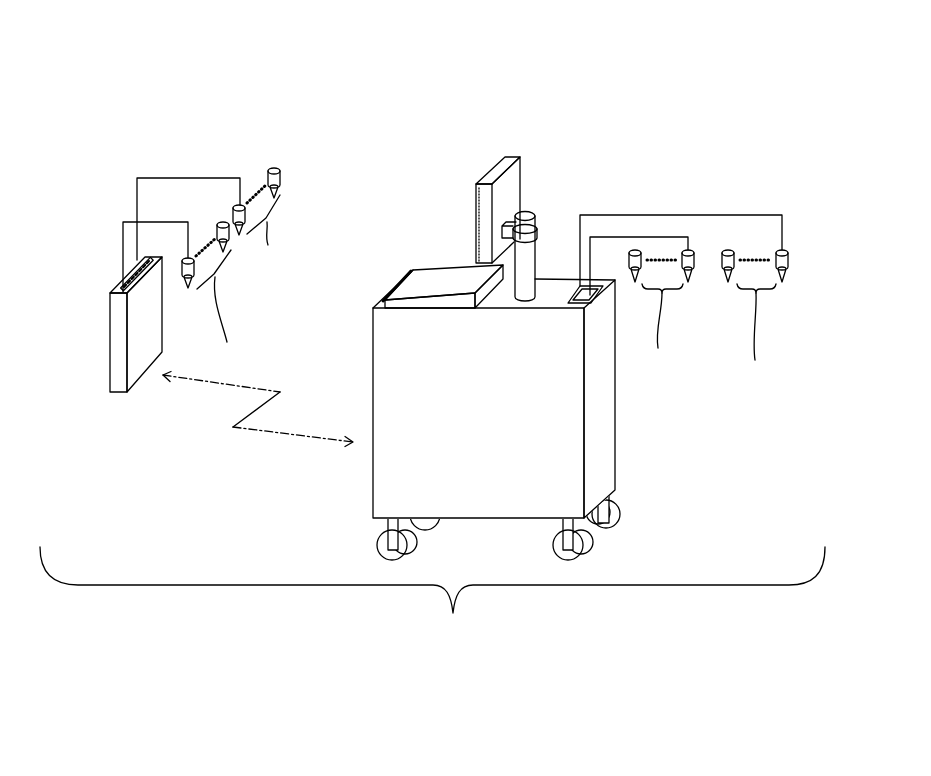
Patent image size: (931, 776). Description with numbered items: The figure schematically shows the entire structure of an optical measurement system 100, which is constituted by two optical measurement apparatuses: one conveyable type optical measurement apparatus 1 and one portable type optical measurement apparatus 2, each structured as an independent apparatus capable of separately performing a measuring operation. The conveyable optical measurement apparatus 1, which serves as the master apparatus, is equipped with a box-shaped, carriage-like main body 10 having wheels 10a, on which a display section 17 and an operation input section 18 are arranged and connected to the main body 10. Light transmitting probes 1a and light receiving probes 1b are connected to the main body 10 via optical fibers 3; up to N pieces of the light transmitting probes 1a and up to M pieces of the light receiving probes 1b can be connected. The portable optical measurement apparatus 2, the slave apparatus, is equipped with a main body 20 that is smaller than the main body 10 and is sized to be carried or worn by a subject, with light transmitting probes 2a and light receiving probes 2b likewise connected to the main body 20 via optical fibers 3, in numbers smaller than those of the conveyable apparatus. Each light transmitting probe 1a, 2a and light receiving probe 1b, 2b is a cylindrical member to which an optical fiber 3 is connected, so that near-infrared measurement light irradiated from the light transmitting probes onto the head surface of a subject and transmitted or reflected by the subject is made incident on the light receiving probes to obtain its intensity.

The optical measurement system 100 is at (191, 103).
The conveyable type optical measurement apparatus 1 is at (400, 192).
The light transmitting probe 1a is at (633, 284).
The light receiving probe 1b is at (727, 284).
The portable type optical measurement apparatus 2 is at (90, 174).
The light transmitting probe 2a is at (188, 291).
The light receiving probe 2b is at (276, 200).
The optical fiber cable 3 is at (185, 178).
The main body 10 is at (608, 430).
The wheels 10a is at (417, 545).
The display section 17 is at (488, 177).
The operation input section 18 is at (448, 283).
The main body 20 is at (110, 354).